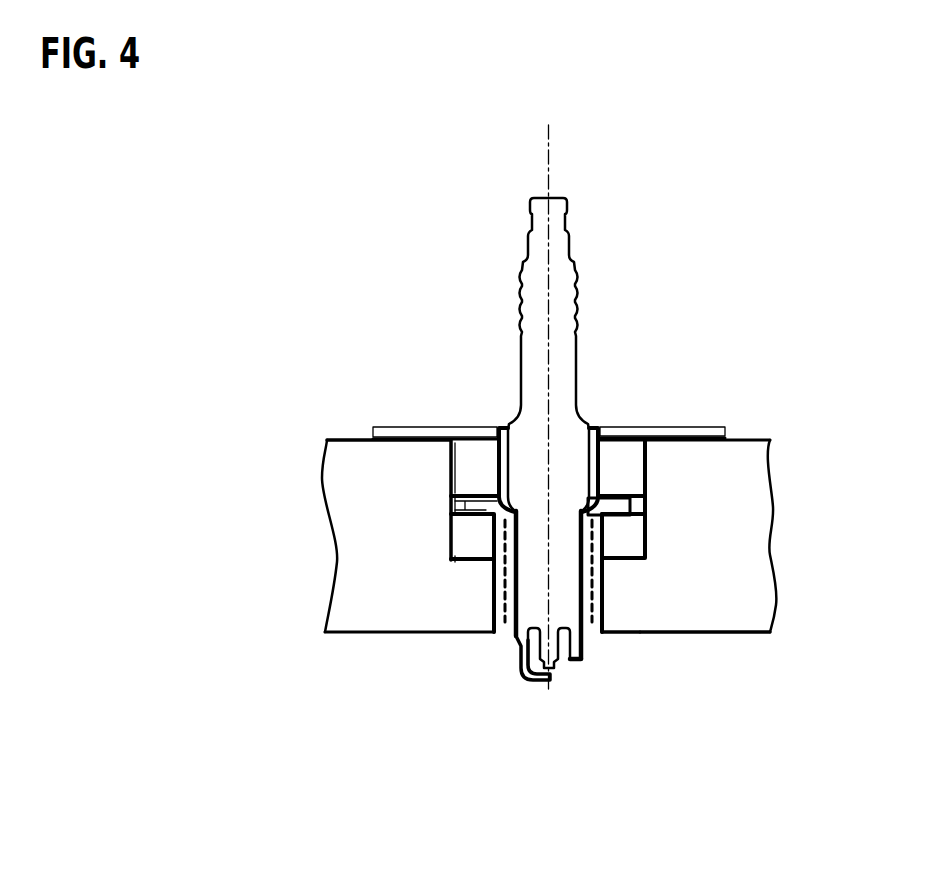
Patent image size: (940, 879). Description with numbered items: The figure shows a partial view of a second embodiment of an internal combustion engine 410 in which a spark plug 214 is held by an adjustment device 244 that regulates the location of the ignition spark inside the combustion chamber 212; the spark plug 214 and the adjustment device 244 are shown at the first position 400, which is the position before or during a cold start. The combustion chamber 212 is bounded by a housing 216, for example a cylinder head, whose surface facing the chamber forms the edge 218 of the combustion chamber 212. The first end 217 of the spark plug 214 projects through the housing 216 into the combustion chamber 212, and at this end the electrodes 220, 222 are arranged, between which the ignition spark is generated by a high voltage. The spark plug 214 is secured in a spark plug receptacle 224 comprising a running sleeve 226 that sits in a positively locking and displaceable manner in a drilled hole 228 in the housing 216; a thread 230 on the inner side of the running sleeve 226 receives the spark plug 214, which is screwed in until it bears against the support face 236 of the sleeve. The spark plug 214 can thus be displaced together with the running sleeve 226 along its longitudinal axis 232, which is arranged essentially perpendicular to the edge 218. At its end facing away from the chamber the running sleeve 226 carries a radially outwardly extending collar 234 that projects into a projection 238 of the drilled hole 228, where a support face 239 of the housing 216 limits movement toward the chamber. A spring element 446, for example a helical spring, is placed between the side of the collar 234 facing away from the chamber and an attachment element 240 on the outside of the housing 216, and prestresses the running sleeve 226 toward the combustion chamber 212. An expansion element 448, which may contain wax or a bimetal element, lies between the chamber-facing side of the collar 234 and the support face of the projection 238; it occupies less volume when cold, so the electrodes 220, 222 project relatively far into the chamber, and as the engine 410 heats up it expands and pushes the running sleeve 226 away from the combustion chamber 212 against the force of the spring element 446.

The first position 400 is at (282, 132).
The internal combustion engine 410 is at (296, 255).
The combustion chamber 212 is at (349, 514).
The spark plug 214 is at (566, 277).
The housing 216 is at (763, 556).
The first end 217 is at (521, 717).
The edge of the combustion chamber 218 is at (710, 632).
The electrode 220 is at (557, 666).
The electrode 222 is at (553, 680).
The spark plug receptacle 224 is at (484, 655).
The running sleeve 226 is at (603, 582).
The drilled hole 228 is at (600, 623).
The thread 230 is at (613, 537).
The longitudinal axis 232 is at (553, 165).
The collar 234 is at (477, 510).
The support face 236 is at (585, 498).
The projection 238 is at (465, 503).
The support face 239 is at (462, 563).
The attachment element 240 is at (378, 424).
The adjustment device 244 is at (462, 348).
The spring element 446 is at (478, 467).
The expansion element 448 is at (472, 537).